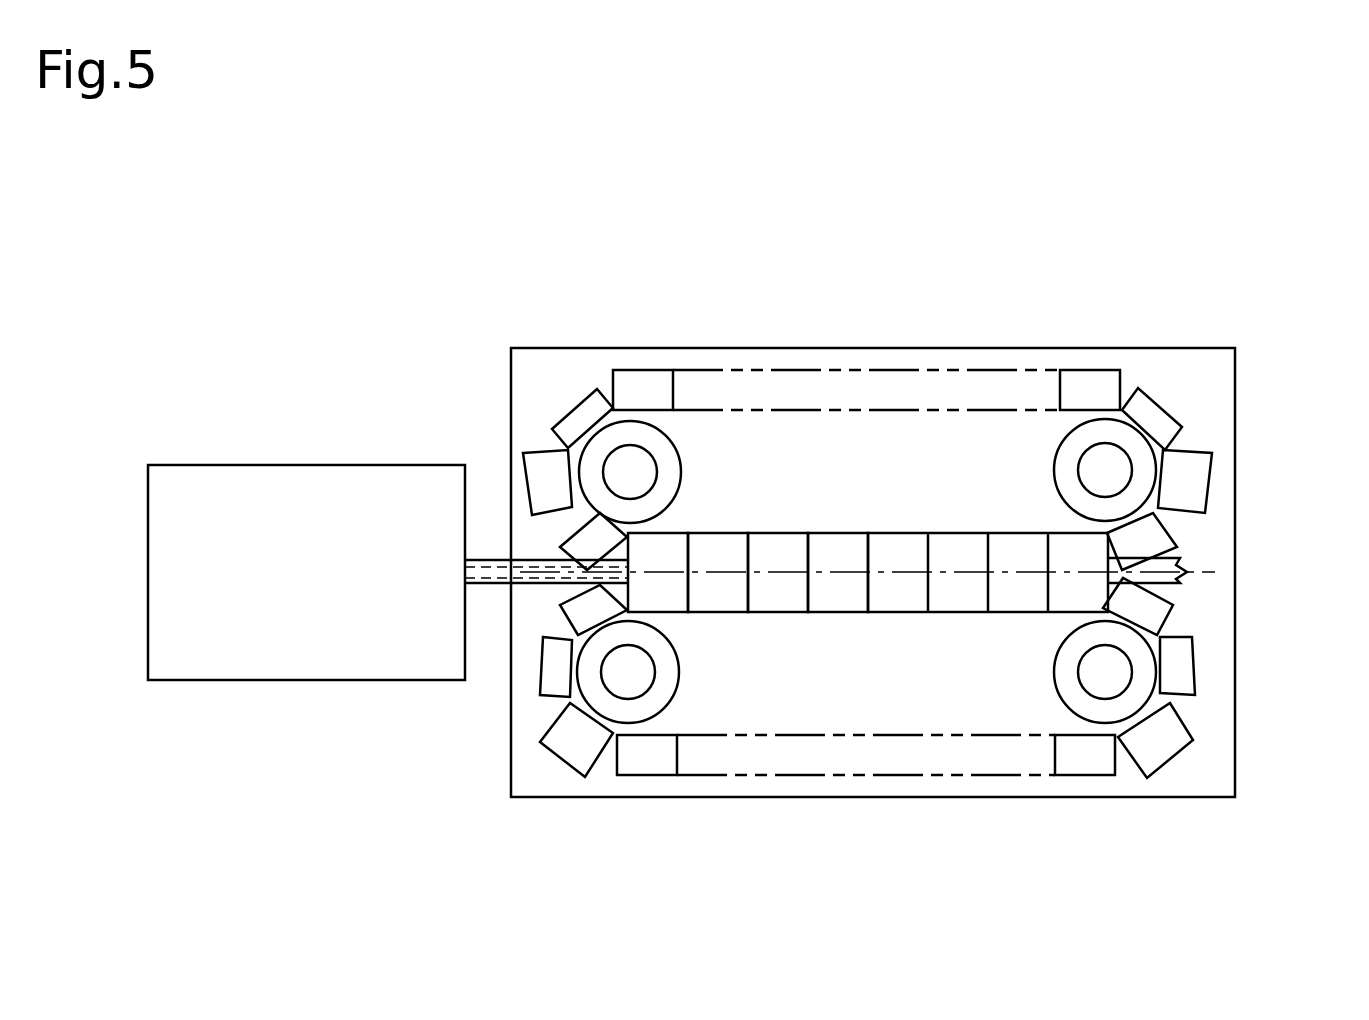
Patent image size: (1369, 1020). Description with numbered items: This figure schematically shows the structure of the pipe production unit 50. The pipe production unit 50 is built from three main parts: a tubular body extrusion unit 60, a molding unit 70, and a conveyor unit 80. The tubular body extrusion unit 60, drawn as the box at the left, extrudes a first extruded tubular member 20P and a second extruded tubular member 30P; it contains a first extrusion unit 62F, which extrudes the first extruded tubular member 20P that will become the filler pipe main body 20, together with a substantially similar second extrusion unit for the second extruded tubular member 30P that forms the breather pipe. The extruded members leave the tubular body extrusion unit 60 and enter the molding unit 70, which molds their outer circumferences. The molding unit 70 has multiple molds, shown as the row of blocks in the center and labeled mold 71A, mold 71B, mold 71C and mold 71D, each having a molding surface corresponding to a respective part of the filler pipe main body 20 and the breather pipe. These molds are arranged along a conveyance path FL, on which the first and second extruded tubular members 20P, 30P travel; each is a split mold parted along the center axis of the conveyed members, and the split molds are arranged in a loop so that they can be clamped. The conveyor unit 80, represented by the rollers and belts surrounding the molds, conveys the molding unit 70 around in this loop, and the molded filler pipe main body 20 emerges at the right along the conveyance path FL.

The pipe production unit 50 is at (525, 280).
The tubular body extrusion unit 60 is at (297, 492).
The first extrusion unit 62F is at (207, 470).
The second extruded tubular member 30P is at (503, 565).
The first extruded tubular member 20P is at (481, 585).
The molding unit 70 is at (1143, 380).
The conveyor unit 80 is at (1118, 460).
The mold 71A is at (828, 605).
The mold 71B is at (773, 602).
The mold 71C is at (718, 545).
The mold 71D is at (672, 545).
The filler pipe main body 20 is at (1180, 557).
The conveyance path FL is at (1200, 573).